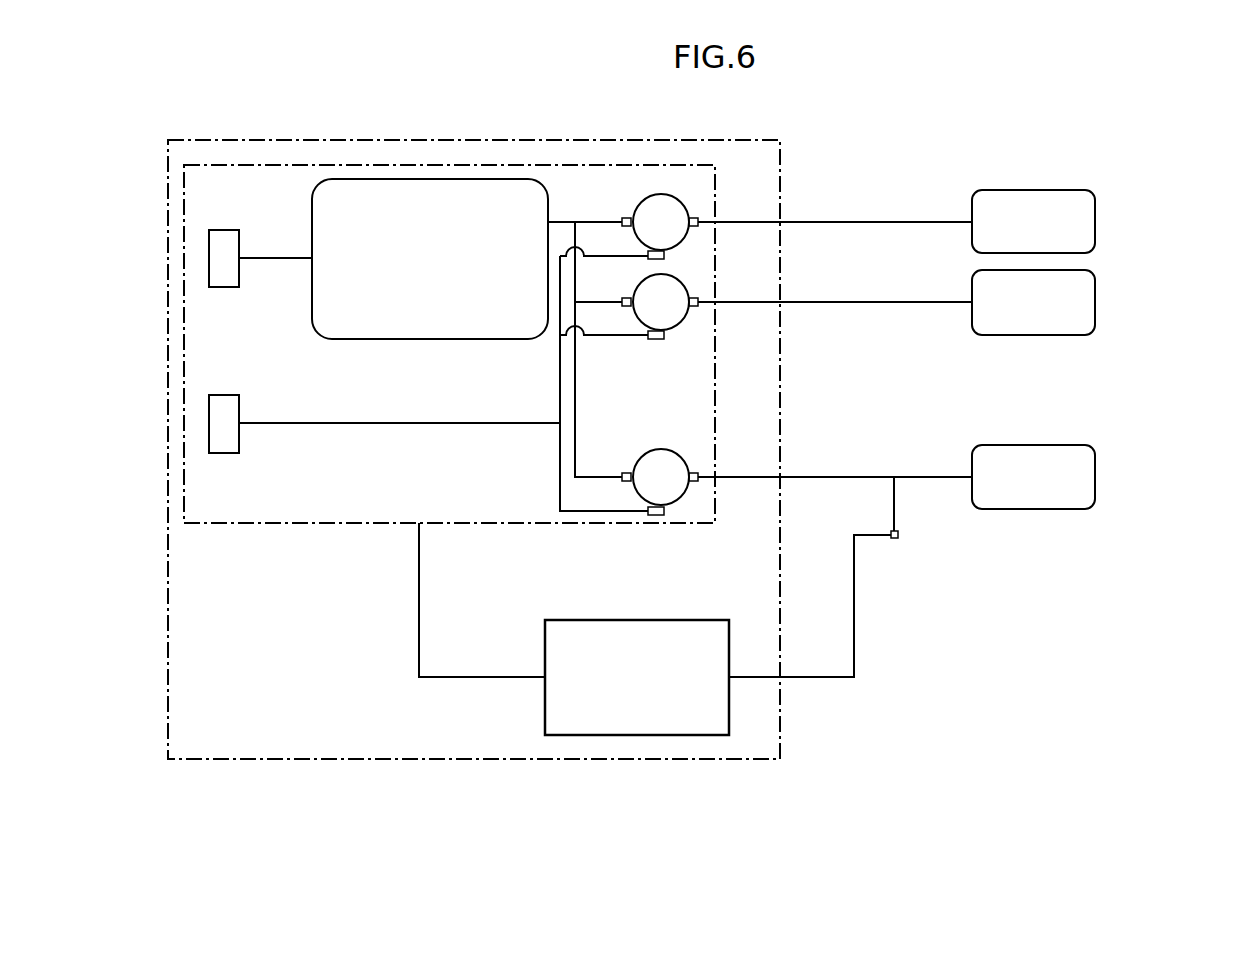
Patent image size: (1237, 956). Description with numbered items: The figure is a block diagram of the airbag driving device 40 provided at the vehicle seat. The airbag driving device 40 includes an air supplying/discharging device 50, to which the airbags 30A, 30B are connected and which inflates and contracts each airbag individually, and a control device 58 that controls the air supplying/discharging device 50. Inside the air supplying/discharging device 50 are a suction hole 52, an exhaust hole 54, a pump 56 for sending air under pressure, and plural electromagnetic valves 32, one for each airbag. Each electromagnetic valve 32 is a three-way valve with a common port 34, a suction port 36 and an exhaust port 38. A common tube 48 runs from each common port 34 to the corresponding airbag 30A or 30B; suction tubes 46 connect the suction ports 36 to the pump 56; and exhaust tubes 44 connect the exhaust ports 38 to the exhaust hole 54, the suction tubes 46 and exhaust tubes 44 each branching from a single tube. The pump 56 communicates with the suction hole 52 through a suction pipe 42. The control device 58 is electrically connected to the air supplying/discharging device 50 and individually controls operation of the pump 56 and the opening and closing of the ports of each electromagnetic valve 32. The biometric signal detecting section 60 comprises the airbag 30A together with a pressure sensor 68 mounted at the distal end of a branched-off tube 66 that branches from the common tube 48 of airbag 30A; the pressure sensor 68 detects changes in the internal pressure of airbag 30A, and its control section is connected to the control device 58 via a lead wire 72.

The airbag 30A is at (1096, 469).
The airbag 30B is at (1096, 214).
The electromagnetic valve 32 is at (668, 193).
The common port 34 is at (698, 222).
The suction port 36 is at (622, 226).
The exhaust port 38 is at (664, 255).
The airbag driving device 40 is at (323, 760).
The suction pipe 42 is at (267, 260).
The exhaust tube 44 is at (388, 424).
The suction tube 46 is at (562, 220).
The common tube 48 is at (857, 221).
The air supplying/discharging device 50 is at (288, 524).
The suction hole 52 is at (232, 230).
The exhaust hole 54 is at (232, 395).
The pump 56 is at (390, 340).
The control device 58 is at (638, 736).
The biometric signal detecting section 60 is at (871, 594).
The branched-off tube 66 is at (895, 505).
The pressure sensor 68 is at (898, 535).
The lead wire 72 is at (855, 659).